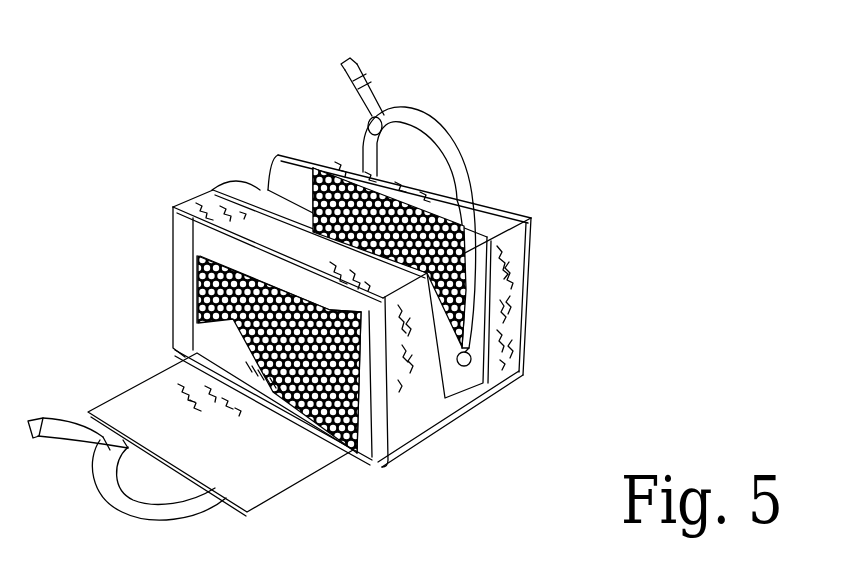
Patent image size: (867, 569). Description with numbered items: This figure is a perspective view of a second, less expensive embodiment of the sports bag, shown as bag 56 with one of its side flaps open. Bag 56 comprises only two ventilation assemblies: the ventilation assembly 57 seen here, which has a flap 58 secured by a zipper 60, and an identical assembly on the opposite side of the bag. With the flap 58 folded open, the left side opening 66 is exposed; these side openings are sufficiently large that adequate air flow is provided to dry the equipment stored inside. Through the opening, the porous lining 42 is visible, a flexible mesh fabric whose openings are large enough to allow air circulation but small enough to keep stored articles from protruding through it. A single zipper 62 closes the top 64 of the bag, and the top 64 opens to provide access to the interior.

The lining 42 is at (193, 284).
The bag 56 is at (565, 334).
The ventilation assembly 57 is at (140, 333).
The flap 58 is at (267, 480).
The zipper 60 is at (333, 466).
The zipper 62 is at (253, 188).
The top 64 is at (195, 200).
The left side opening 66 is at (538, 247).